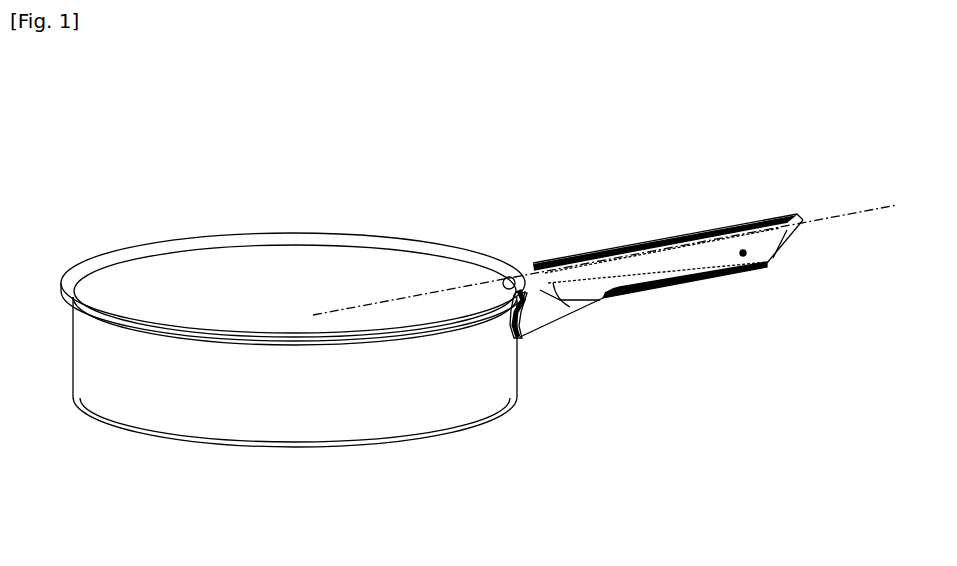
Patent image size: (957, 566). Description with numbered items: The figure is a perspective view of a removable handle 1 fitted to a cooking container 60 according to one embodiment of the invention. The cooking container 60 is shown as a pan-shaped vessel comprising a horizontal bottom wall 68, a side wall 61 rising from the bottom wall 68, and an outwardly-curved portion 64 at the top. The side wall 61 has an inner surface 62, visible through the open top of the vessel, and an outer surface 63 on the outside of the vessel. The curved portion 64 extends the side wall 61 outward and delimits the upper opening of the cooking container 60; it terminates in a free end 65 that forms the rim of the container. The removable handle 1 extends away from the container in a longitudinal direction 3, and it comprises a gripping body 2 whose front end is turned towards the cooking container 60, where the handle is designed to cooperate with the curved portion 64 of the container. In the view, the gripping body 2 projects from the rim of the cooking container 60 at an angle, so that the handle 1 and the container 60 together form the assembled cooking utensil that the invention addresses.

The removable handle 1 is at (634, 170).
The gripping body 2 is at (677, 267).
The longitudinal direction 3 is at (543, 280).
The cooking container 60 is at (145, 248).
The side wall 61 is at (427, 380).
The inner surface 62 is at (272, 275).
The outer surface 63 is at (515, 368).
The outwardly-curved portion 64 is at (100, 262).
The free end 65 is at (473, 252).
The horizontal bottom wall 68 is at (382, 447).